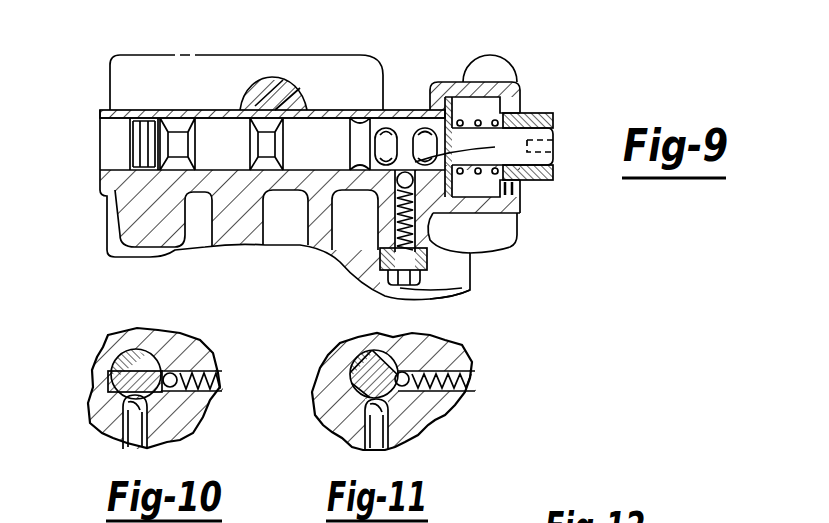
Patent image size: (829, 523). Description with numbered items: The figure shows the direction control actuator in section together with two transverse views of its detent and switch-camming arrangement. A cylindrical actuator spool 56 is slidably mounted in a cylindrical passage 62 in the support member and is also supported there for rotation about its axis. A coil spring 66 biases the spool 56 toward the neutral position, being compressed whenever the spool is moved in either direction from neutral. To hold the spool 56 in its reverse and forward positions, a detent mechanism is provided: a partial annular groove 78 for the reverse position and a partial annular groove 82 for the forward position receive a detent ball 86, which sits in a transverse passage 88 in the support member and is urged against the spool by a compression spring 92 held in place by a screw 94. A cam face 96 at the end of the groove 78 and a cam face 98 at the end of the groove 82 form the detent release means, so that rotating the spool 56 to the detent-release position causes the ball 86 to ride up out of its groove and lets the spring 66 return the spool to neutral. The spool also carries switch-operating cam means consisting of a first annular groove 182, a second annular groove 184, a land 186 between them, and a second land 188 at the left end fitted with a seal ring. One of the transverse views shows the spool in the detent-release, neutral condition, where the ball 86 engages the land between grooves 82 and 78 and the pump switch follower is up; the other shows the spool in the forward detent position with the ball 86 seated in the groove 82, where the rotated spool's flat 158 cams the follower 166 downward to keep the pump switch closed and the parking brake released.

In FIG. 9, the cylindrical passage 62 is at (98, 137).
In FIG. 9, the coil spring 66 is at (540, 123).
In FIG. 9, the partial annular groove 78 is at (425, 137).
In FIG. 9, the partial annular groove 82 is at (386, 146).
In FIG. 10, the partial annular groove 82 is at (158, 342).
In FIG. 11, the partial annular groove 82 is at (393, 350).
In FIG. 9, the detent ball 86 is at (377, 192).
In FIG. 10, the detent ball 86 is at (192, 343).
In FIG. 11, the detent ball 86 is at (406, 393).
In FIG. 9, the transverse passage 88 is at (470, 250).
In FIG. 9, the compression spring 92 is at (373, 246).
In FIG. 9, the screw 94 is at (452, 294).
In FIG. 9, the cam face 96 is at (520, 185).
In FIG. 9, the cam face 98 is at (382, 148).
In FIG. 9, the annular groove 182 is at (178, 132).
In FIG. 9, the annular groove 184 is at (283, 112).
In FIG. 9, the land 186 is at (225, 115).
In FIG. 9, the second land 188 is at (155, 115).
In FIG. 10, the actuator spool 56 is at (105, 368).
In FIG. 11, the actuator spool 56 is at (354, 347).
In FIG. 10, the flat 158 is at (113, 434).
In FIG. 11, the flat 158 is at (327, 420).
In FIG. 10, the cam follower 166 is at (150, 443).
In FIG. 11, the cam follower 166 is at (390, 437).